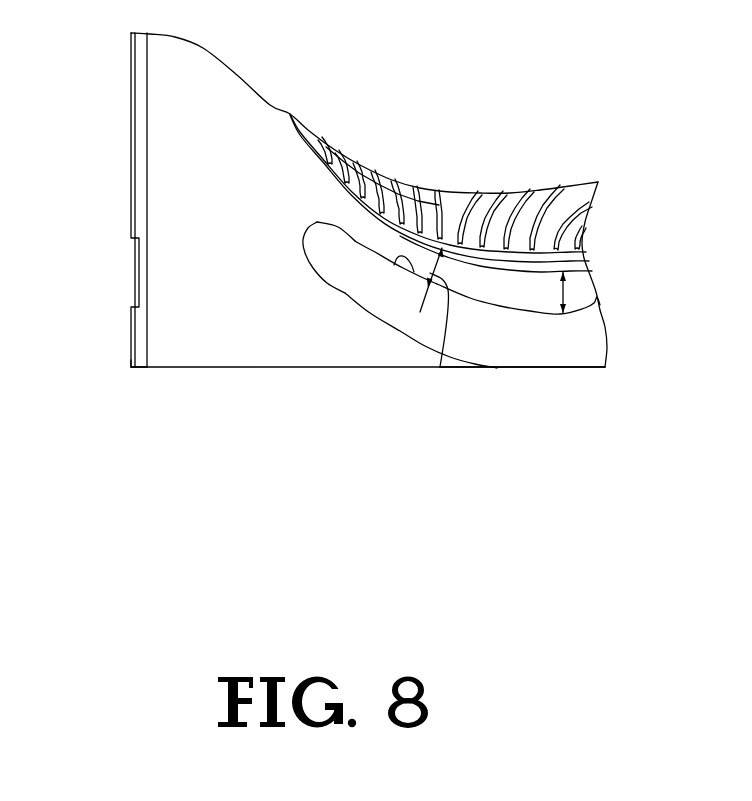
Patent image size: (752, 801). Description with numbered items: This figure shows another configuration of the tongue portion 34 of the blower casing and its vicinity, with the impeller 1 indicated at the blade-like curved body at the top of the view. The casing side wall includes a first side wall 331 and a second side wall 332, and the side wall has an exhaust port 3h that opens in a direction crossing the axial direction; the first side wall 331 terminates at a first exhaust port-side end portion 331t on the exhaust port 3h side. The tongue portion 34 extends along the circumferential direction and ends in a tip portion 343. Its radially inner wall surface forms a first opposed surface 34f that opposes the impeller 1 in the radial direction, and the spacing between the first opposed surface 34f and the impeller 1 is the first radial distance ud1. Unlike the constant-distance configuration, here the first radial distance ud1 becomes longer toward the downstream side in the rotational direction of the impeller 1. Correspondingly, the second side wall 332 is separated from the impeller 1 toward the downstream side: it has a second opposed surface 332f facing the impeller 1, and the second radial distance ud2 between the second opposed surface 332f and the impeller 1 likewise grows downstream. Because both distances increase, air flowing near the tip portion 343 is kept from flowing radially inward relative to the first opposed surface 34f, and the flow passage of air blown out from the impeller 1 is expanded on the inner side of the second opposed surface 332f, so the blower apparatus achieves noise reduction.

The impeller 1 is at (287, 130).
The exhaust port 3h is at (210, 383).
The tongue portion 34 is at (346, 296).
The first opposed surface 34f is at (395, 272).
The first side wall 331 is at (138, 353).
The first exhaust port-side end portion 331t is at (140, 370).
The second side wall 332 is at (577, 357).
The second opposed surface 332f is at (598, 299).
The tip portion 343 is at (318, 222).
The first radial distance ud1 is at (427, 295).
The second radial distance ud2 is at (564, 290).